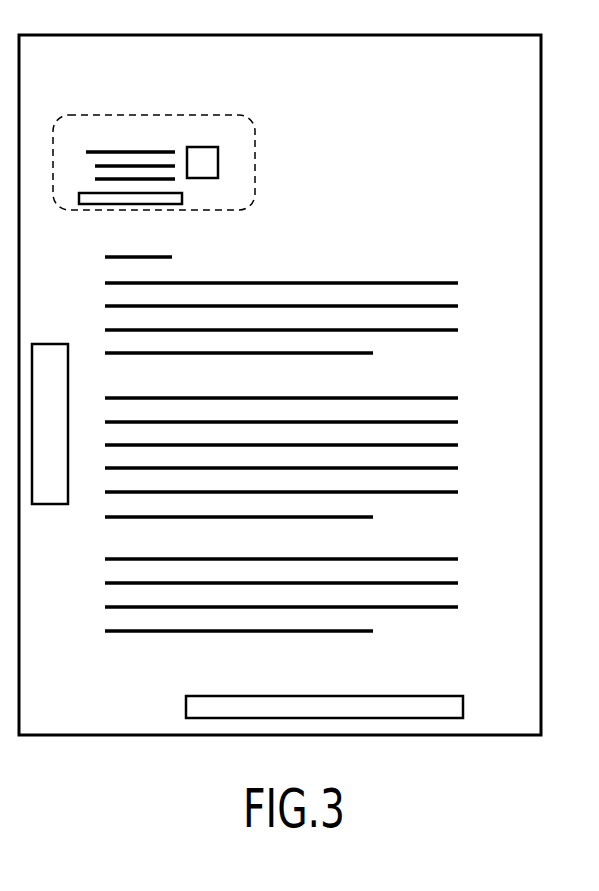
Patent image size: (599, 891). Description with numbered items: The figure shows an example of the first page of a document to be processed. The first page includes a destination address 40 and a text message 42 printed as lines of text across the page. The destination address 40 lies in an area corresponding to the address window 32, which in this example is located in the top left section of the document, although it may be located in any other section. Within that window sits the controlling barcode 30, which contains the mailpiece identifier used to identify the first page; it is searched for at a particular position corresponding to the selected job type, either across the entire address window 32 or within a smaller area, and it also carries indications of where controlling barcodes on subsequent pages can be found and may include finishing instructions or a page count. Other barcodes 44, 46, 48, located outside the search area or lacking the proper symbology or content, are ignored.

The controlling barcode 30 is at (202, 178).
The address window 32 is at (255, 119).
The destination address 40 is at (122, 150).
The text message 42 is at (397, 280).
The other barcode 44 is at (88, 204).
The other barcode 46 is at (42, 505).
The other barcode 48 is at (186, 705).